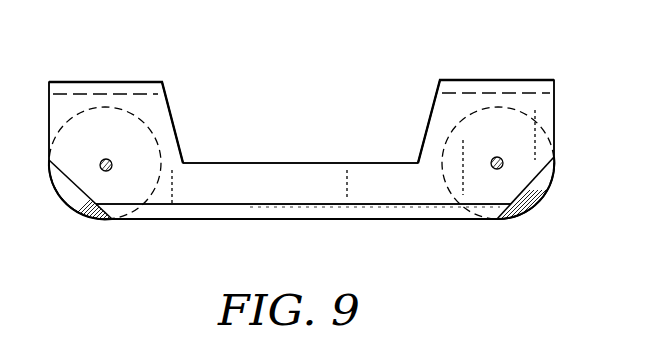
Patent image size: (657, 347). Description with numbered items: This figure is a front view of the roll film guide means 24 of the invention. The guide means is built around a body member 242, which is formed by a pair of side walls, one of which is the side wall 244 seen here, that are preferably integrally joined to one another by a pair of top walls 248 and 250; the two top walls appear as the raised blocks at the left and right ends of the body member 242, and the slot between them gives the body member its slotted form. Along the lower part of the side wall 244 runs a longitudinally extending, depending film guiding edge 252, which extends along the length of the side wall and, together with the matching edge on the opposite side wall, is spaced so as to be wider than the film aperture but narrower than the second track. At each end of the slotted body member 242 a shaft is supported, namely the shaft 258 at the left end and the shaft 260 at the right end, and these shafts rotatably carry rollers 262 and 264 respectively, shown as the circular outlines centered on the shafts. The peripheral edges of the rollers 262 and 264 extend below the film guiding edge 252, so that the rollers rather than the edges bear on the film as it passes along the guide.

The roll film guide means 24 is at (160, 32).
The body member 242 is at (337, 132).
The side wall 244 is at (297, 187).
The top wall 248 is at (80, 81).
The top wall 250 is at (513, 78).
The film guiding edge 252 is at (200, 222).
The shaft 258 is at (113, 152).
The shaft 260 is at (500, 157).
The roller 262 is at (72, 202).
The roller 264 is at (555, 180).